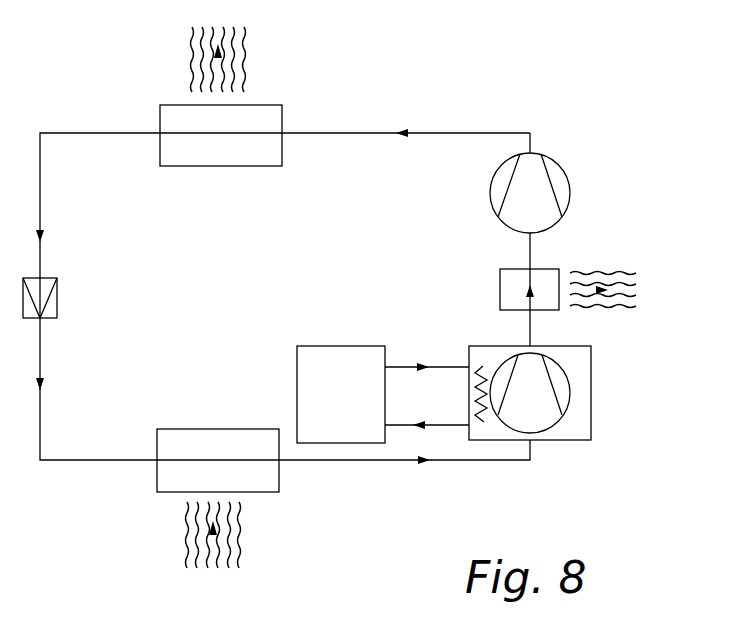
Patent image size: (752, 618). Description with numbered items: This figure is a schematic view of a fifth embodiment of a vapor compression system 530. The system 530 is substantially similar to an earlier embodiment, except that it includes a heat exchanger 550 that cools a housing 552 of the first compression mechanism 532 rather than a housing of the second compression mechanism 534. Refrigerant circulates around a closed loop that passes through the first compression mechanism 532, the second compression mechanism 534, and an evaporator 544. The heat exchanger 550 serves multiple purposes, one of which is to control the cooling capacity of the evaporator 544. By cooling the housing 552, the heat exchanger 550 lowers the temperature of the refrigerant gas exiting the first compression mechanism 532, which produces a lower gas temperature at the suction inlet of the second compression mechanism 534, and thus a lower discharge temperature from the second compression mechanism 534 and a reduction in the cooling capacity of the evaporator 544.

The vapor compression system 530 is at (563, 108).
The second compression mechanism 534 is at (571, 192).
The housing 552 is at (591, 356).
The first compression mechanism 532 is at (591, 430).
The heat exchanger 550 is at (383, 394).
The evaporator 544 is at (279, 470).